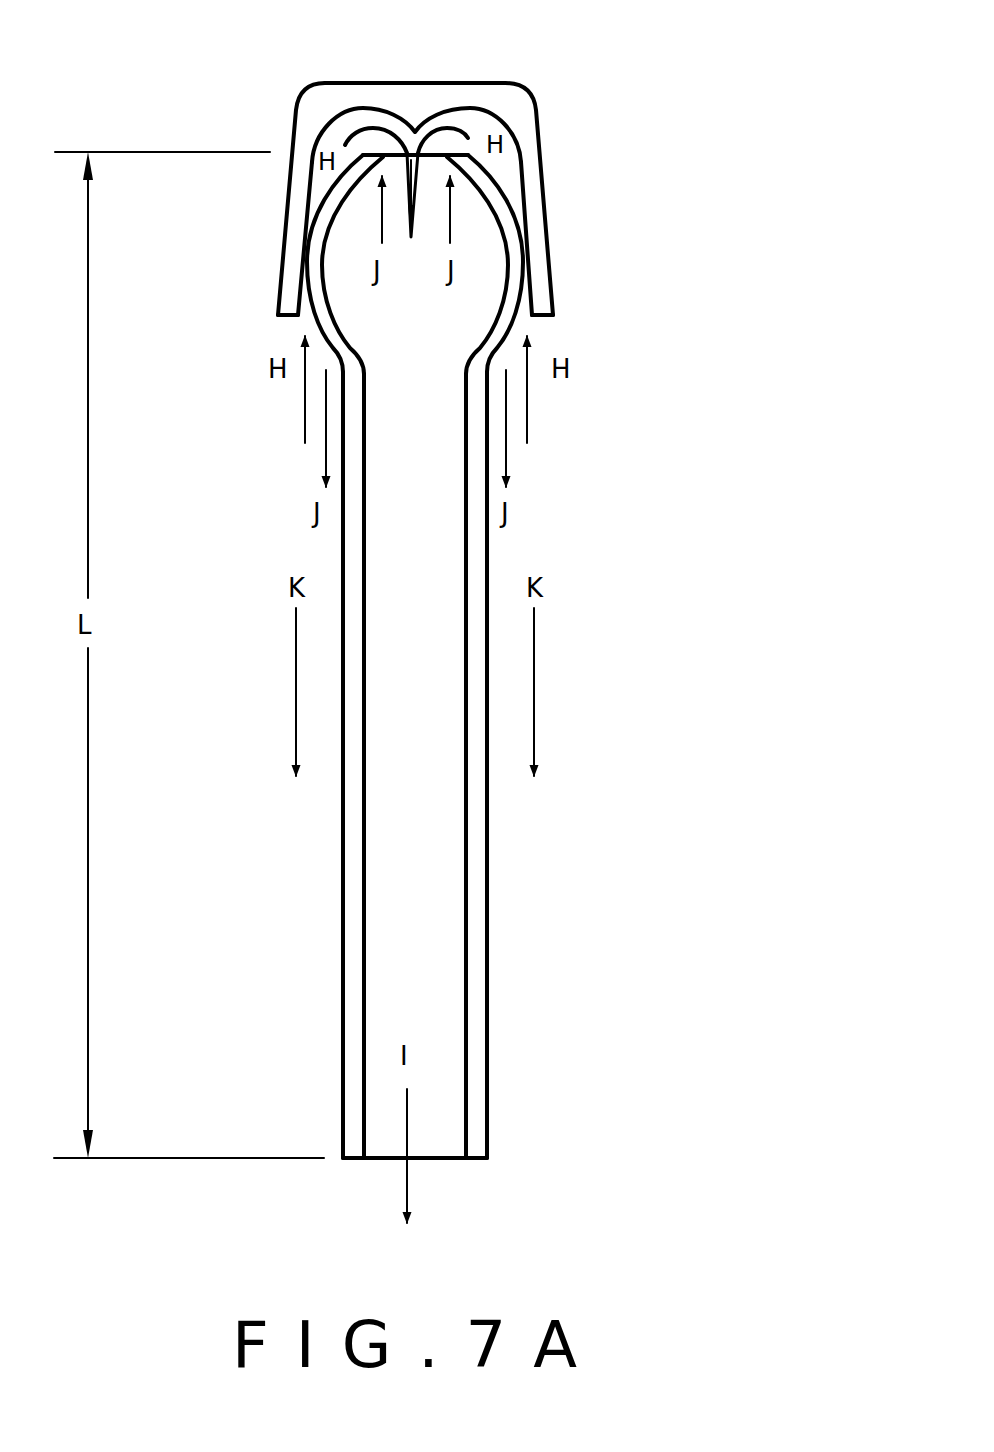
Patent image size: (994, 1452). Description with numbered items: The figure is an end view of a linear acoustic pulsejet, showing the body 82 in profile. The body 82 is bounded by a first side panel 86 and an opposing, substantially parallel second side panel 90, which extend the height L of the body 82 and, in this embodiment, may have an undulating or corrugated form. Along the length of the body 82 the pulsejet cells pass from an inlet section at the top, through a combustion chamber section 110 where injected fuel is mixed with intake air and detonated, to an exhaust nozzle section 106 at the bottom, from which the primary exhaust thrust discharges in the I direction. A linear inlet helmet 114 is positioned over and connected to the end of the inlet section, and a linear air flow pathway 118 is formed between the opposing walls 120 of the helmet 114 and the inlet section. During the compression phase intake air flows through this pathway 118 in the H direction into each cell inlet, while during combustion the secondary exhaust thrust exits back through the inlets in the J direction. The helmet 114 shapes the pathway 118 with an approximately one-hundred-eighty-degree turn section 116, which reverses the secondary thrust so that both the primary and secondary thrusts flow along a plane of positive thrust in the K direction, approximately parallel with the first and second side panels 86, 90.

The body 82 is at (342, 552).
The first side panel 86 is at (350, 823).
The second side panel 90 is at (478, 803).
The exhaust nozzle section 106 is at (422, 908).
The combustion chamber section 110 is at (403, 282).
The linear inlet helmet 114 is at (422, 97).
The 180° turn section 116 is at (342, 123).
The linear air flow pathway 118 is at (318, 177).
The opposing walls 120 is at (292, 253).